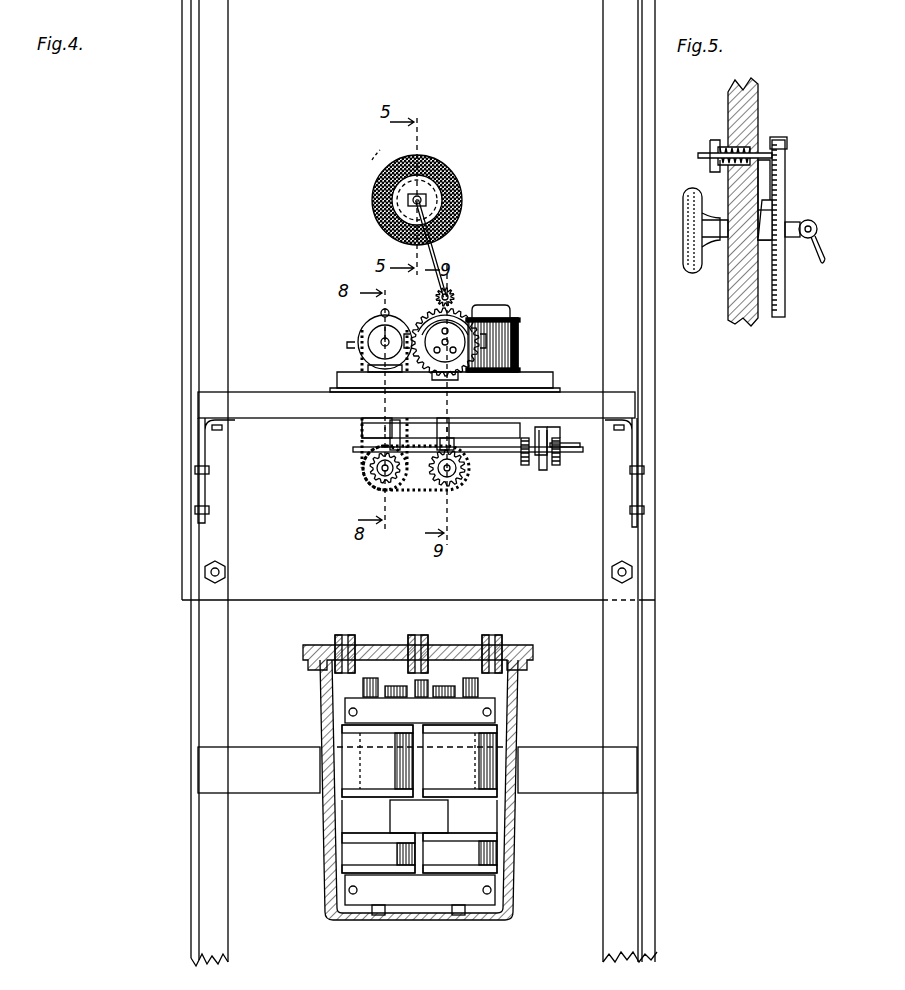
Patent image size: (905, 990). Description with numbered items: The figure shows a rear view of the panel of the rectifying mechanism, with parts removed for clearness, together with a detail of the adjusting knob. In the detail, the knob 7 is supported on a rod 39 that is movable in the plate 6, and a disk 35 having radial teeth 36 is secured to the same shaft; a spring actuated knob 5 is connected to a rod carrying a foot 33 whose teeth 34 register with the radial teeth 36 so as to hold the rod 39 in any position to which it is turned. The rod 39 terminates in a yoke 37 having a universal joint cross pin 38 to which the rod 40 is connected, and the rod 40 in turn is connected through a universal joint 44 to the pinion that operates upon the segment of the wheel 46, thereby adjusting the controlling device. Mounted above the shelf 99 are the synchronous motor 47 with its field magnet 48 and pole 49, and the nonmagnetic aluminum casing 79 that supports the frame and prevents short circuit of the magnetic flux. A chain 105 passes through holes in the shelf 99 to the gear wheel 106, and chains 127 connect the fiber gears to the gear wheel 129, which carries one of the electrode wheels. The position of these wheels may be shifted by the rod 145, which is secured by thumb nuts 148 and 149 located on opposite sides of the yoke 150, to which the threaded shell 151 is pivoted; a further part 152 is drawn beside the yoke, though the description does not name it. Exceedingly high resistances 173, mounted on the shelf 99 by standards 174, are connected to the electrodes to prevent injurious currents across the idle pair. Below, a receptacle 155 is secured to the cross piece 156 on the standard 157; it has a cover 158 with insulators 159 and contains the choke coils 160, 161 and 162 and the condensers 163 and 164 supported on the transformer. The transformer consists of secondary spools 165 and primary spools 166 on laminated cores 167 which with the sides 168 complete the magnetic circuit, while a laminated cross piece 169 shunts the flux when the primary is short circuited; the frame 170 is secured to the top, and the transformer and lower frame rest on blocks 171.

In FIG. 5, the spring actuated knob 5 is at (700, 155).
In FIG. 5, the plate 6 is at (722, 125).
In FIG. 5, the knob 7 is at (694, 190).
In FIG. 5, the foot 33 is at (766, 160).
In FIG. 5, the teeth 34 is at (782, 140).
In FIG. 4, the disk 35 is at (440, 200).
In FIG. 5, the disk 35 is at (775, 200).
In FIG. 4, the radial teeth 36 is at (432, 160).
In FIG. 5, the radial teeth 36 is at (780, 182).
In FIG. 4, the yoke 37 is at (427, 200).
In FIG. 5, the yoke 37 is at (814, 220).
In FIG. 5, the universal joint cross pin 38 is at (805, 238).
In FIG. 5, the rod 39 is at (784, 228).
In FIG. 4, the rod 40 is at (437, 262).
In FIG. 5, the rod 40 is at (820, 262).
In FIG. 4, the universal joint 44 is at (545, 386).
In FIG. 4, the wheel 46 is at (455, 315).
In FIG. 4, the synchronous motor 47 is at (520, 350).
In FIG. 4, the field magnet 48 is at (519, 330).
In FIG. 4, the pole 49 is at (500, 308).
In FIG. 4, the aluminum casing 79 is at (360, 333).
In FIG. 4, the shelf 99 is at (630, 405).
In FIG. 4, the chain 105 is at (370, 441).
In FIG. 4, the gear wheel 106 is at (363, 482).
In FIG. 4, the chains 127 is at (420, 500).
In FIG. 4, the gear wheel 129 is at (463, 490).
In FIG. 4, the rod 145 is at (495, 453).
In FIG. 4, the thumb nut 148 is at (525, 466).
In FIG. 4, the thumb nut 149 is at (558, 458).
In FIG. 4, the yoke 150 is at (545, 432).
In FIG. 4, the threaded shell 151 is at (543, 470).
In FIG. 4, the pin 152 is at (560, 448).
In FIG. 4, the receptacle 155 is at (515, 905).
In FIG. 4, the cross piece 156 is at (285, 748).
In FIG. 4, the standard 157 is at (200, 862).
In FIG. 4, the cover 158 is at (535, 655).
In FIG. 4, the insulators 159 is at (360, 634).
In FIG. 4, the choke coil 160 is at (362, 686).
In FIG. 4, the choke coil 161 is at (410, 680).
In FIG. 4, the choke coil 162 is at (480, 686).
In FIG. 4, the condenser 163 is at (384, 694).
In FIG. 4, the condenser 164 is at (456, 694).
In FIG. 4, the secondary spool 165 is at (500, 768).
In FIG. 4, the primary spool 166 is at (350, 875).
In FIG. 4, the laminated core 167 is at (370, 834).
In FIG. 4, the sides 168 is at (385, 740).
In FIG. 4, the laminated cross piece 169 is at (345, 842).
In FIG. 4, the frame 170 is at (496, 716).
In FIG. 4, the blocks 171 is at (378, 915).
In FIG. 4, the high resistances 173 is at (478, 440).
In FIG. 4, the standards 174 is at (545, 416).